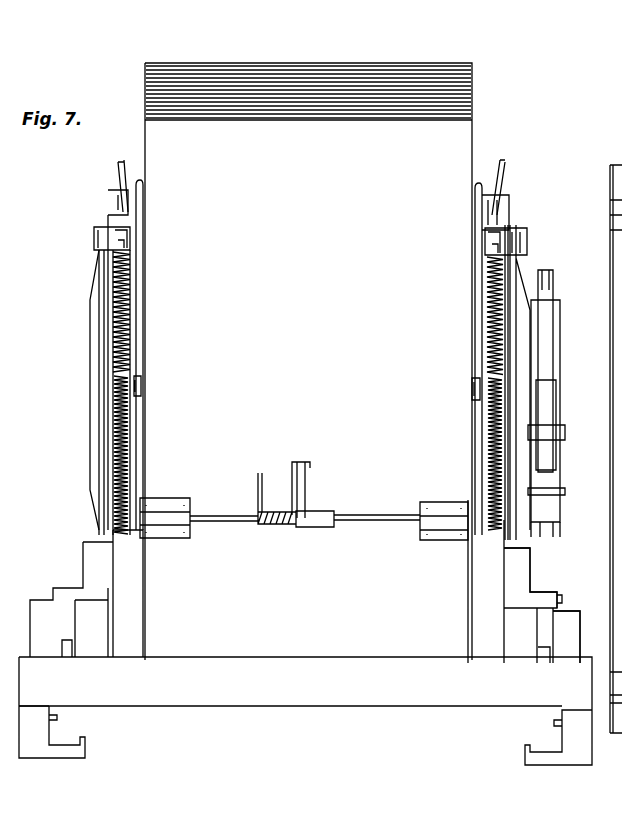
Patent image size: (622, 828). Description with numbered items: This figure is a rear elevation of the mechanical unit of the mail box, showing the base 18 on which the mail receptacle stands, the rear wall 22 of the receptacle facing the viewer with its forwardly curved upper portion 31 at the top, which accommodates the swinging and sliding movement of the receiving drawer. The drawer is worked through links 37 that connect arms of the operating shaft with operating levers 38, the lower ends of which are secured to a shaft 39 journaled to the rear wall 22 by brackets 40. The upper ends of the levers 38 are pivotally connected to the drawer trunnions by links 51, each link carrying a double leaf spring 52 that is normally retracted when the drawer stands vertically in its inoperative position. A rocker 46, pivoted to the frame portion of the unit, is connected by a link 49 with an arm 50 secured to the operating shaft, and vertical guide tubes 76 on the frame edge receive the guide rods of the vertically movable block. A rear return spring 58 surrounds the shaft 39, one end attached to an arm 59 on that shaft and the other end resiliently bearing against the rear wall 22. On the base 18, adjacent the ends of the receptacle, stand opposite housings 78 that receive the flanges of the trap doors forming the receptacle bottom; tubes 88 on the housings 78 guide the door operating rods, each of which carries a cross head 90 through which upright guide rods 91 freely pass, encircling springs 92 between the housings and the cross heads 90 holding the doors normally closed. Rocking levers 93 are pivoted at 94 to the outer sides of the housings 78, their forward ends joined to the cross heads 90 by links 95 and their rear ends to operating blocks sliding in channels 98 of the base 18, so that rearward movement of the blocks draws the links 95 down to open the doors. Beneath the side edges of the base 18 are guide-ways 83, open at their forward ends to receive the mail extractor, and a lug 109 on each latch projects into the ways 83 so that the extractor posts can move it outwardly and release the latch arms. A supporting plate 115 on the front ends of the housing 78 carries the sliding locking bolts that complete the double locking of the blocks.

The base 18 is at (305, 711).
The rear wall 22 is at (308, 346).
The forwardly curved upper portion 31 is at (301, 70).
The links 37 is at (143, 392).
The operating levers 38 is at (474, 264).
The shaft 39 is at (380, 522).
The brackets 40 is at (160, 506).
The rocker 46 is at (545, 290).
The link 49 is at (545, 394).
The arm 50 is at (548, 455).
The links 51 is at (478, 228).
The double leaf spring 52 is at (498, 165).
The rear spring 58 is at (278, 526).
The arm 59 is at (306, 486).
The guide tubes 76 is at (560, 525).
The housings 78 is at (478, 588).
The guide-ways 83 is at (42, 738).
The tubes 88 is at (115, 446).
The cross head 90 is at (100, 238).
The guide rods 91 is at (490, 328).
The springs 92 is at (492, 352).
The rocking levers 93 is at (540, 598).
The pivot 94 is at (562, 598).
The links 95 is at (90, 368).
The channels 98 is at (612, 208).
The lug 109 is at (60, 718).
The supporting plate 115 is at (572, 650).